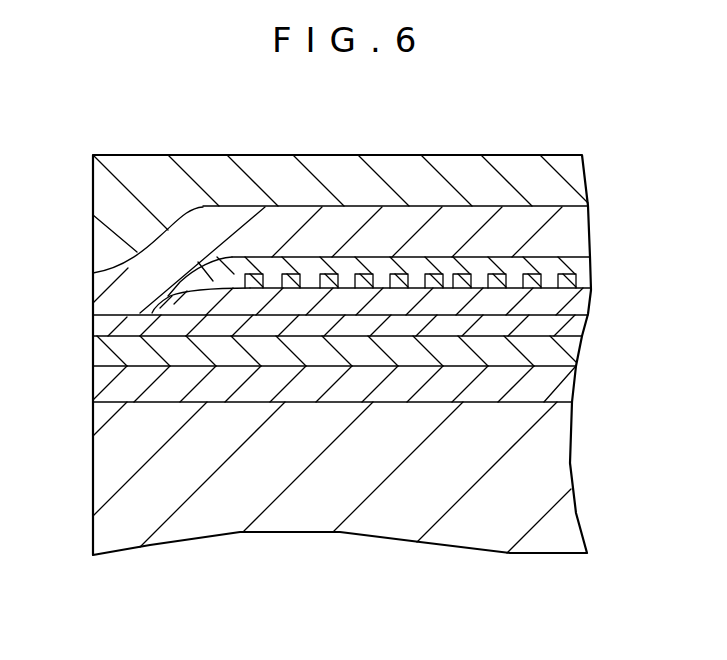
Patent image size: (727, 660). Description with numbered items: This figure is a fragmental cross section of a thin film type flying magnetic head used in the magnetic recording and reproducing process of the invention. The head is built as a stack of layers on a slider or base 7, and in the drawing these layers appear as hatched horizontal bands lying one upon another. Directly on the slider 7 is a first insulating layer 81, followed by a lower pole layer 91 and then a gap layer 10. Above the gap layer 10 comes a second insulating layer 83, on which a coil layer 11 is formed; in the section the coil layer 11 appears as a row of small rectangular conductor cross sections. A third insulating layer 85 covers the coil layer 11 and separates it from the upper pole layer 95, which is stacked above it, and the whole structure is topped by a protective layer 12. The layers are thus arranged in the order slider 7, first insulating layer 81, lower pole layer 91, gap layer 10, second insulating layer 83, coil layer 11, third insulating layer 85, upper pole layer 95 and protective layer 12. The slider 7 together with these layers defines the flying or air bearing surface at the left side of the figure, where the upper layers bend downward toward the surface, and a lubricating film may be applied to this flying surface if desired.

The slider 7 is at (546, 537).
The gap layer 10 is at (121, 326).
The coil layer 11 is at (259, 272).
The protective layer 12 is at (513, 168).
The first insulating layer 81 is at (548, 387).
The second insulating layer 83 is at (582, 303).
The third insulating layer 85 is at (588, 262).
The lower pole layer 91 is at (557, 355).
The upper pole layer 95 is at (585, 213).